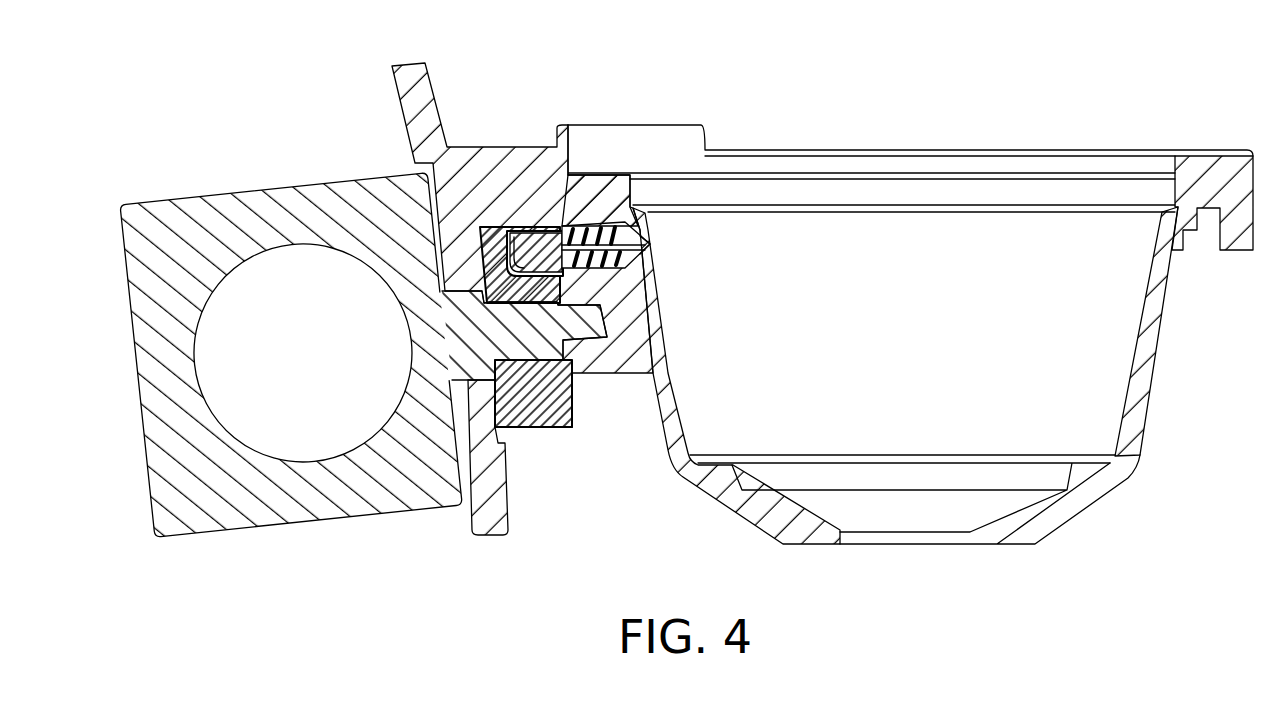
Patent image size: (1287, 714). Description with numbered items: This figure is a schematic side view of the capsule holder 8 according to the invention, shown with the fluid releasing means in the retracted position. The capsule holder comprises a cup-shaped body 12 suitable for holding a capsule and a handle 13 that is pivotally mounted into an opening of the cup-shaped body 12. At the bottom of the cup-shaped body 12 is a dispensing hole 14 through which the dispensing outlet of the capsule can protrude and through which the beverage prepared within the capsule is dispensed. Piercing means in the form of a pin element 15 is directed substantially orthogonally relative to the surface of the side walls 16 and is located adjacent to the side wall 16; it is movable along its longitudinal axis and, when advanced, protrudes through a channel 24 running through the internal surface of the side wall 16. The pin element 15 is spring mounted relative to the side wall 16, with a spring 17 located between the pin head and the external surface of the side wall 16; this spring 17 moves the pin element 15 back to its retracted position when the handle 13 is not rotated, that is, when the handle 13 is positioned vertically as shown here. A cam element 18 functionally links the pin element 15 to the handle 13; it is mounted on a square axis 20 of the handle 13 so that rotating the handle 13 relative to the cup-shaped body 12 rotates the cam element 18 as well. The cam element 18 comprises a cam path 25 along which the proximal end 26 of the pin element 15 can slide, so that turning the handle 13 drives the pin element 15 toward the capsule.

The capsule 8 is at (907, 323).
The cup-shaped body 12 is at (889, 339).
The handle 13 is at (160, 213).
The dispensing hole 14 is at (898, 540).
The pin element 15 is at (528, 232).
The side wall 16 is at (655, 318).
The spring 17 is at (596, 226).
The cam element 18 is at (566, 426).
The square axis 20 is at (541, 428).
The channel 24 is at (659, 245).
The cam path 25 is at (503, 263).
The proximal end 26 is at (512, 247).